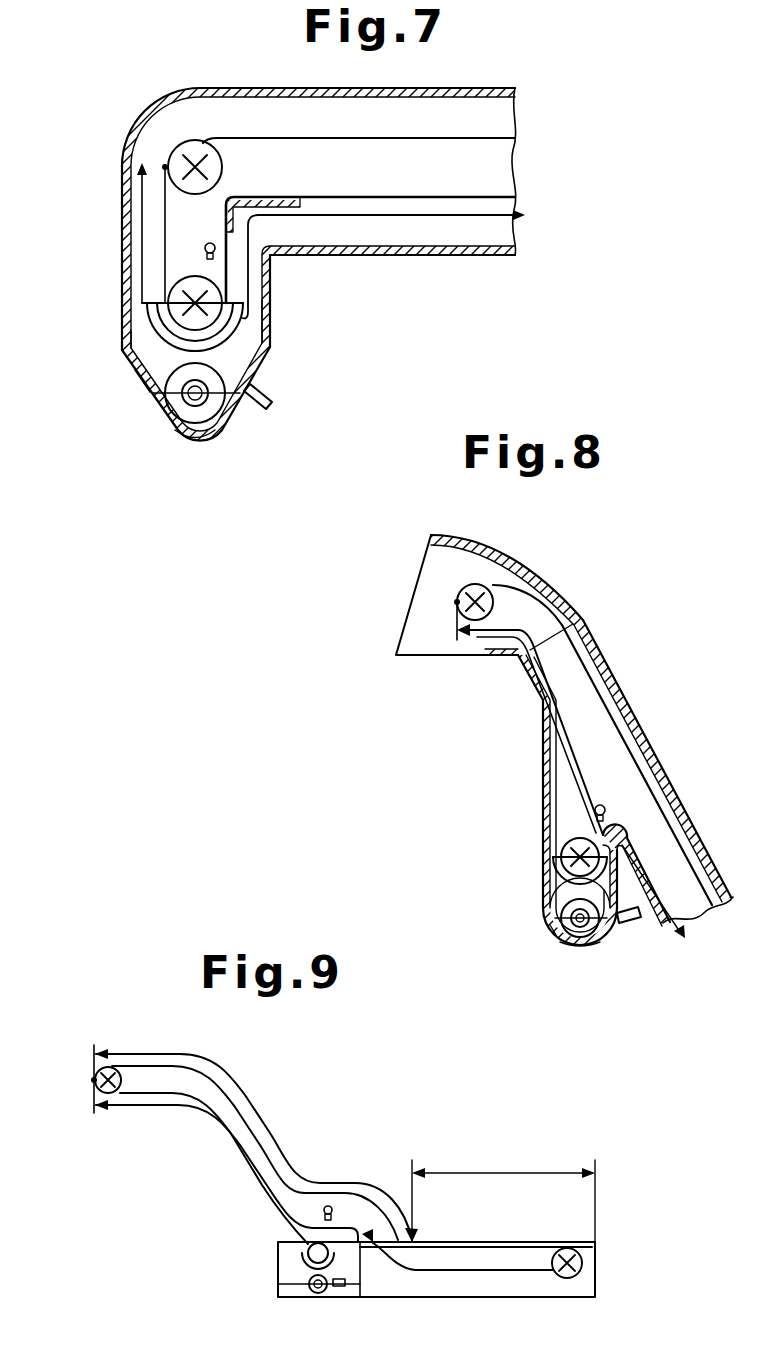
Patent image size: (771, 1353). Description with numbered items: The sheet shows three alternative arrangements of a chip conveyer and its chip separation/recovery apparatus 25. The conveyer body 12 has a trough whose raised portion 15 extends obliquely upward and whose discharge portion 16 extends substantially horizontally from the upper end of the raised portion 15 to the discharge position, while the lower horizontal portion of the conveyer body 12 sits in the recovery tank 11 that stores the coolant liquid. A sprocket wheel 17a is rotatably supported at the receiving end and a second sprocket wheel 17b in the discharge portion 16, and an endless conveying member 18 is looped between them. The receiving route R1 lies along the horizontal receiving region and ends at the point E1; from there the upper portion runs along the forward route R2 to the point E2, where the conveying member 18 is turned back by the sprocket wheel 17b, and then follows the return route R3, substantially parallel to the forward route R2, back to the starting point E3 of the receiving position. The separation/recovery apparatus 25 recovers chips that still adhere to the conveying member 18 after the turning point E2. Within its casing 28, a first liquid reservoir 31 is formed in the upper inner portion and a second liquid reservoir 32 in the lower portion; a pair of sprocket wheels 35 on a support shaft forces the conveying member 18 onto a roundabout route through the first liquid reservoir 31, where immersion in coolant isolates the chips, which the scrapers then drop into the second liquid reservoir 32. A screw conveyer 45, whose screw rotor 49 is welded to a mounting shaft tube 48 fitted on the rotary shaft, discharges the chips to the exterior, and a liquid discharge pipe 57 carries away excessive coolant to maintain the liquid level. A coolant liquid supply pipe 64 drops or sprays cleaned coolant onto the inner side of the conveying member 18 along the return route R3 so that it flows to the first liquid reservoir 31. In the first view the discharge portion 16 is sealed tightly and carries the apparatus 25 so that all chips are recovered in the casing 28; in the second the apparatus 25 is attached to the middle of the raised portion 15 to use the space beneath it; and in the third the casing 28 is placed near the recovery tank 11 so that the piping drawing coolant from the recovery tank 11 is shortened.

In FIG. 9, the recovery tank 11 is at (510, 1298).
In FIG. 8, the conveyer body 12 is at (611, 661).
In FIG. 8, the raised portion 15 is at (678, 795).
In FIG. 7, the discharge portion 16 is at (493, 86).
In FIG. 8, the discharge portion 16 is at (473, 533).
In FIG. 9, the sprocket wheel 17a is at (548, 1248).
In FIG. 7, the sprocket wheel 17b is at (223, 165).
In FIG. 8, the sprocket wheel 17b is at (462, 590).
In FIG. 9, the sprocket wheel 17b is at (121, 1098).
In FIG. 7, the conveying member 18 is at (353, 138).
In FIG. 8, the conveying member 18 is at (686, 833).
In FIG. 9, the conveying member 18 is at (290, 1167).
In FIG. 7, the chip separation/recovery apparatus 25 is at (271, 344).
In FIG. 8, the chip separation/recovery apparatus 25 is at (541, 900).
In FIG. 7, the casing 28 is at (122, 338).
In FIG. 9, the casing 28 is at (278, 1283).
In FIG. 7, the first liquid reservoir 31 is at (150, 318).
In FIG. 8, the first liquid reservoir 31 is at (553, 872).
In FIG. 9, the first liquid reservoir 31 is at (303, 1260).
In FIG. 7, the second liquid reservoir 32 is at (180, 432).
In FIG. 8, the second liquid reservoir 32 is at (567, 942).
In FIG. 9, the second liquid reservoir 32 is at (283, 1297).
In FIG. 7, the sprocket wheels 35 is at (180, 282).
In FIG. 8, the sprocket wheels 35 is at (562, 845).
In FIG. 9, the sprocket wheels 35 is at (307, 1250).
In FIG. 7, the screw conveyer 45 is at (153, 413).
In FIG. 8, the screw conveyer 45 is at (551, 939).
In FIG. 9, the screw conveyer 45 is at (297, 1297).
In FIG. 7, the mounting shaft tube 48 is at (222, 426).
In FIG. 8, the mounting shaft tube 48 is at (585, 932).
In FIG. 7, the screw rotor 49 is at (165, 385).
In FIG. 8, the screw rotor 49 is at (580, 940).
In FIG. 7, the liquid discharge pipe 57 is at (275, 393).
In FIG. 8, the liquid discharge pipe 57 is at (631, 926).
In FIG. 9, the liquid discharge pipe 57 is at (338, 1290).
In FIG. 7, the coolant liquid supply pipe 64 is at (207, 243).
In FIG. 8, the coolant liquid supply pipe 64 is at (600, 805).
In FIG. 9, the coolant liquid supply pipe 64 is at (329, 1206).
In FIG. 9, the point E1 is at (417, 1250).
In FIG. 7, the point E2 is at (165, 167).
In FIG. 8, the point E2 is at (457, 602).
In FIG. 9, the point E2 is at (94, 1080).
In FIG. 7, the starting point E3 is at (412, 258).
In FIG. 8, the starting point E3 is at (658, 901).
In FIG. 9, the starting point E3 is at (372, 1248).
In FIG. 9, the receiving route R1 is at (498, 1170).
In FIG. 9, the forward route R2 is at (257, 1103).
In FIG. 7, the return route R3 is at (413, 215).
In FIG. 8, the return route R3 is at (580, 757).
In FIG. 9, the return route R3 is at (218, 1147).